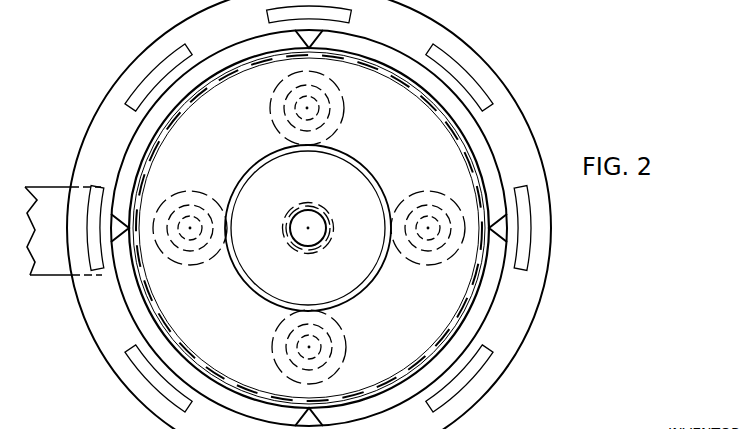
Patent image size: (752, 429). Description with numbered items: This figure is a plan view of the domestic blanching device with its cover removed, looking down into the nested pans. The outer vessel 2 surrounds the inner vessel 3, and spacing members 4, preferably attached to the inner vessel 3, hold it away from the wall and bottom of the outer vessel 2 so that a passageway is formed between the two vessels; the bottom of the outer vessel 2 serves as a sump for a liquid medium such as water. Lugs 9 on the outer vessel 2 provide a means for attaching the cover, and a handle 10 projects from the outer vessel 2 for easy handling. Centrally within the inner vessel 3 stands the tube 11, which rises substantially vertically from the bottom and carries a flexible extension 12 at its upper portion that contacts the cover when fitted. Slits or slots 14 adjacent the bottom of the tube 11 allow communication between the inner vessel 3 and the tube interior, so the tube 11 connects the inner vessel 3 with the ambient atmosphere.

The outer vessel 2 is at (520, 325).
The inner vessel 3 is at (475, 279).
The spacing members 4 is at (124, 224).
The lugs 9 is at (523, 238).
The handle 10 is at (55, 267).
The tube 11 is at (330, 217).
The flexible extension 12 is at (363, 162).
The slits or slots 14 is at (305, 206).